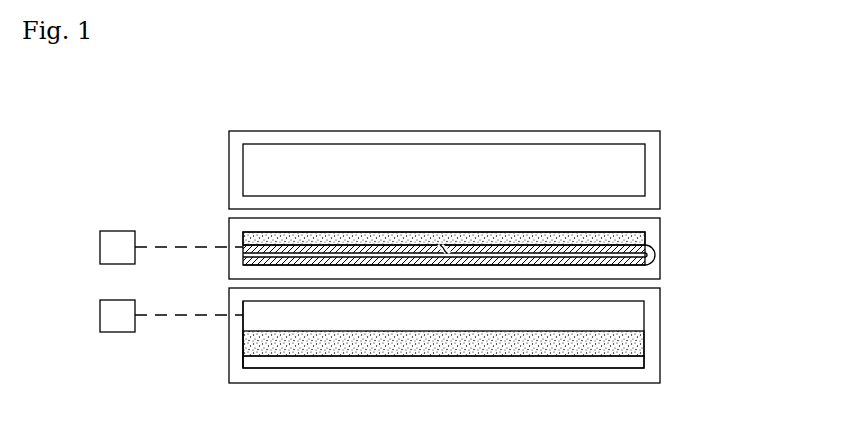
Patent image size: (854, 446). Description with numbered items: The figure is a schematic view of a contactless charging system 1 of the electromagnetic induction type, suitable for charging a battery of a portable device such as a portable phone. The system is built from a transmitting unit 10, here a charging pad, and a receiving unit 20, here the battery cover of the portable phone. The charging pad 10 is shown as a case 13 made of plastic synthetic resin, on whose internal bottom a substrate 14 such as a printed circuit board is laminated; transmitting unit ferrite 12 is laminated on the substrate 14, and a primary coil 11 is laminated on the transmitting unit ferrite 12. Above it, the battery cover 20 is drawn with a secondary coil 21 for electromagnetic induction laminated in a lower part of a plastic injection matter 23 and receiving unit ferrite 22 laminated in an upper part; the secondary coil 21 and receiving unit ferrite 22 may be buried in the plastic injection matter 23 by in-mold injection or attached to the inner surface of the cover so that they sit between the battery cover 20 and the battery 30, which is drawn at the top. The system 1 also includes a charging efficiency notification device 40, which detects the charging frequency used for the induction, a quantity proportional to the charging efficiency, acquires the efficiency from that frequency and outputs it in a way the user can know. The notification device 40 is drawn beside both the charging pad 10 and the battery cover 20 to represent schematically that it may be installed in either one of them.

The contactless charging system 1 is at (195, 143).
The transmitting unit 10 is at (443, 353).
The primary coil 11 is at (627, 315).
The transmitting unit ferrite 12 is at (630, 345).
The case 13 is at (242, 334).
The substrate 14 is at (632, 363).
The receiving unit 20 is at (447, 235).
The secondary coil 21 is at (654, 254).
The receiving unit ferrite 22 is at (647, 236).
The plastic injection matter 23 is at (240, 232).
The battery 30 is at (625, 173).
The charging efficiency notification device 40 is at (118, 231).